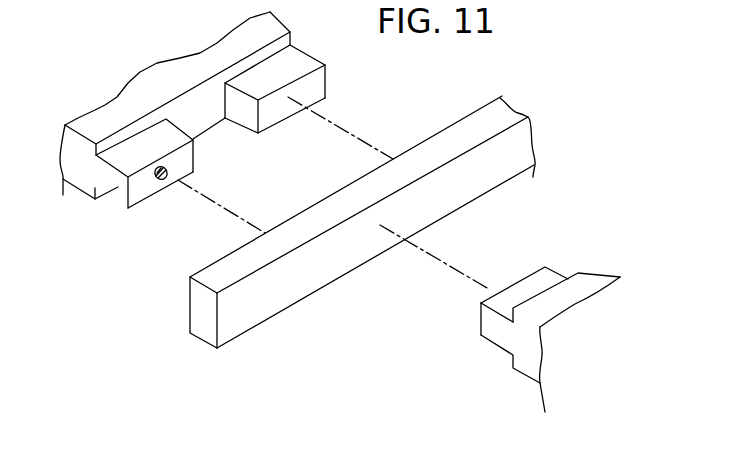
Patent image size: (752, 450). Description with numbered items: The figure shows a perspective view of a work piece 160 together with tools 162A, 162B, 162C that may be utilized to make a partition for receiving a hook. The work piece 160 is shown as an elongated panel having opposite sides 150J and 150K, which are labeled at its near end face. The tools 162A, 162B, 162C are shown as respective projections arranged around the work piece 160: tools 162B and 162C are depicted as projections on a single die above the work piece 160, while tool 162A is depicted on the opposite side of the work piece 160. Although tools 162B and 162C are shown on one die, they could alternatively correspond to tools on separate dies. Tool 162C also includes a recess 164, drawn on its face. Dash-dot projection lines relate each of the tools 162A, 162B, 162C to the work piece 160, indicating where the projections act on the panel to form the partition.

The side 150J is at (190, 303).
The side 150K is at (217, 320).
The work piece 160 is at (331, 231).
The tool 162A is at (550, 277).
The tool 162B is at (295, 58).
The tool 162C is at (117, 188).
The recess 164 is at (167, 171).